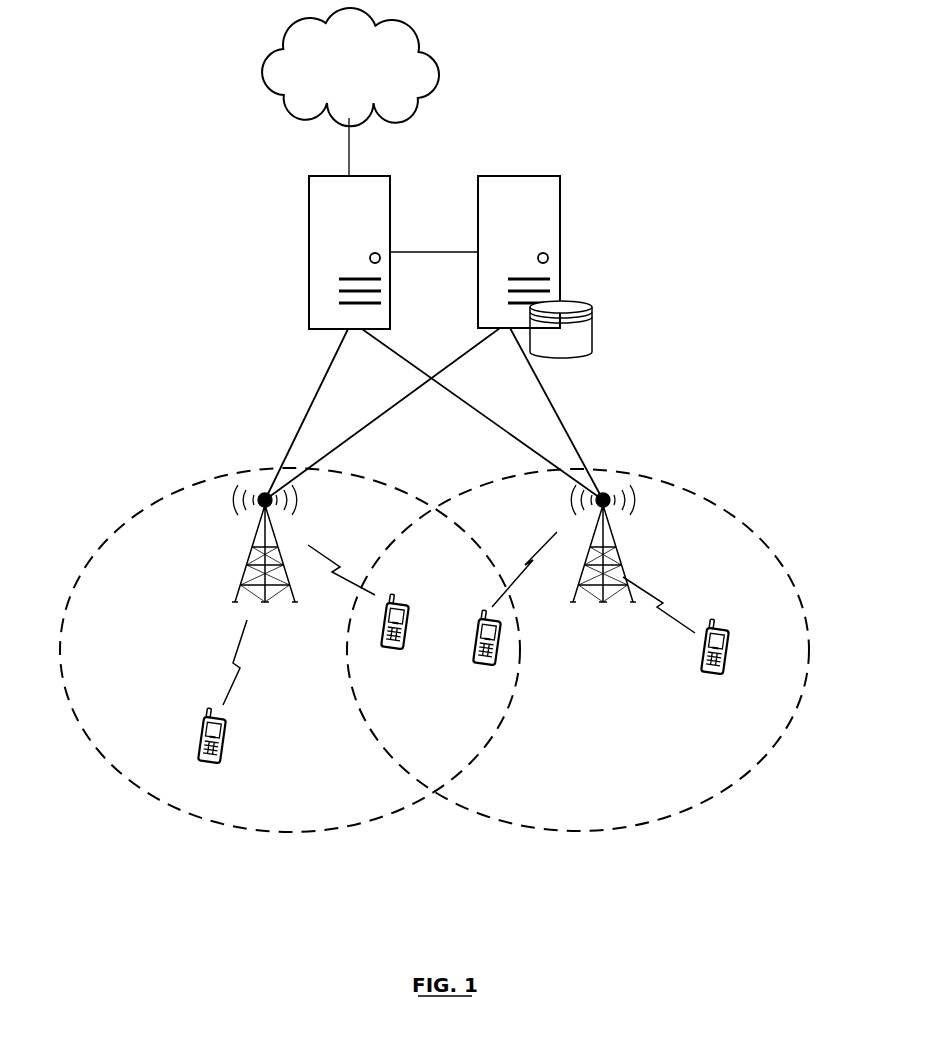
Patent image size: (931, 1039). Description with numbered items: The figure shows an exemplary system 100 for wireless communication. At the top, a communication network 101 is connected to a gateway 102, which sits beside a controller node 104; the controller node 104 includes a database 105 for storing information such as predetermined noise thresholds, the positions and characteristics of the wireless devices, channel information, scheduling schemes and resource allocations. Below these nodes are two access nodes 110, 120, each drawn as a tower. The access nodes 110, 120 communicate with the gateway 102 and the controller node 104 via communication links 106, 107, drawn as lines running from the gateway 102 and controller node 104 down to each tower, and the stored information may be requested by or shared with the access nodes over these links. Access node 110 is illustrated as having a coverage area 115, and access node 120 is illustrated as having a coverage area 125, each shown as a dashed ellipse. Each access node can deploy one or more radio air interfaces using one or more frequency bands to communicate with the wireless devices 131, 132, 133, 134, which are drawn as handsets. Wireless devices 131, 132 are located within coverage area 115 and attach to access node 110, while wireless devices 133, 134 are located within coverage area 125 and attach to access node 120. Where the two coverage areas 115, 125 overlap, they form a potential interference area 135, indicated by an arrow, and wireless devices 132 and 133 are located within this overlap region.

The system 100 is at (521, 92).
The communication network 101 is at (332, 80).
The gateway 102 is at (309, 212).
The controller node 104 is at (560, 233).
The database 105 is at (593, 333).
The communication link 106 is at (413, 367).
The communication link 107 is at (380, 418).
The access node 110 is at (249, 570).
The coverage area 115 is at (287, 833).
The access node 120 is at (622, 575).
The coverage area 125 is at (572, 832).
The wireless device 131 is at (210, 765).
The wireless device 132 is at (389, 648).
The wireless device 133 is at (484, 665).
The wireless device 134 is at (714, 674).
The potential interference area 135 is at (435, 741).